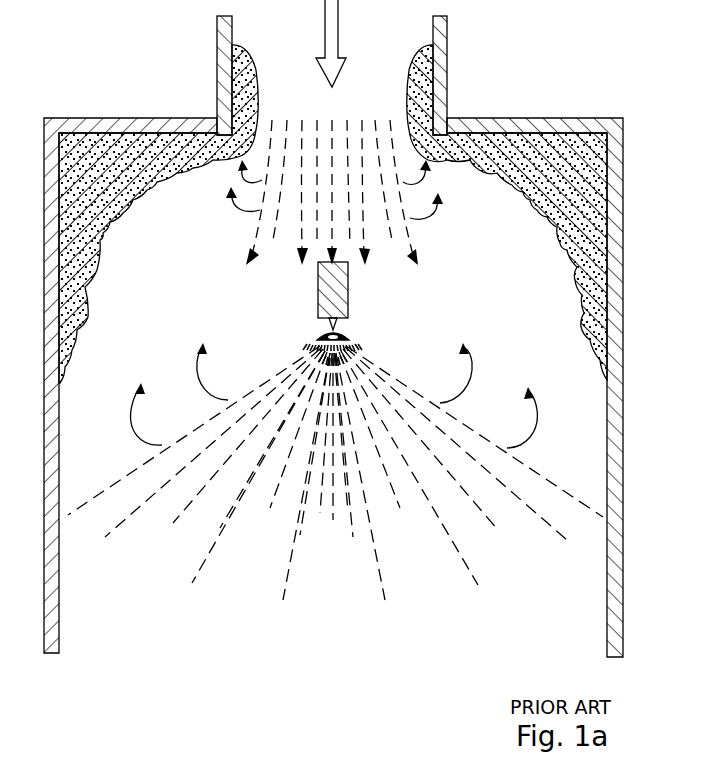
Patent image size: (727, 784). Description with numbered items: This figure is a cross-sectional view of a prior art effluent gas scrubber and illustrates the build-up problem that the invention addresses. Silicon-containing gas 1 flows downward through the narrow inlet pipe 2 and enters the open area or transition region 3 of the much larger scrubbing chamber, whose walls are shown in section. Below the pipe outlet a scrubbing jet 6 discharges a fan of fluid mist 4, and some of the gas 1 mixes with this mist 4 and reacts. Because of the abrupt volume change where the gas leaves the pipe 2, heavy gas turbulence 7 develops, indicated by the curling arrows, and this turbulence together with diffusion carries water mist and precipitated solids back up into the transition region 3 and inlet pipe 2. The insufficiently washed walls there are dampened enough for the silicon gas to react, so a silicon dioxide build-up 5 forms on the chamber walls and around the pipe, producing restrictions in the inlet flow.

The gas 1 is at (336, 30).
The inlet pipe 2 is at (448, 37).
The transition region 3 is at (558, 300).
The fluid mist 4 is at (537, 428).
The build-up 5 is at (126, 210).
The scrubbing jet 6 is at (320, 282).
The gas turbulence 7 is at (425, 184).